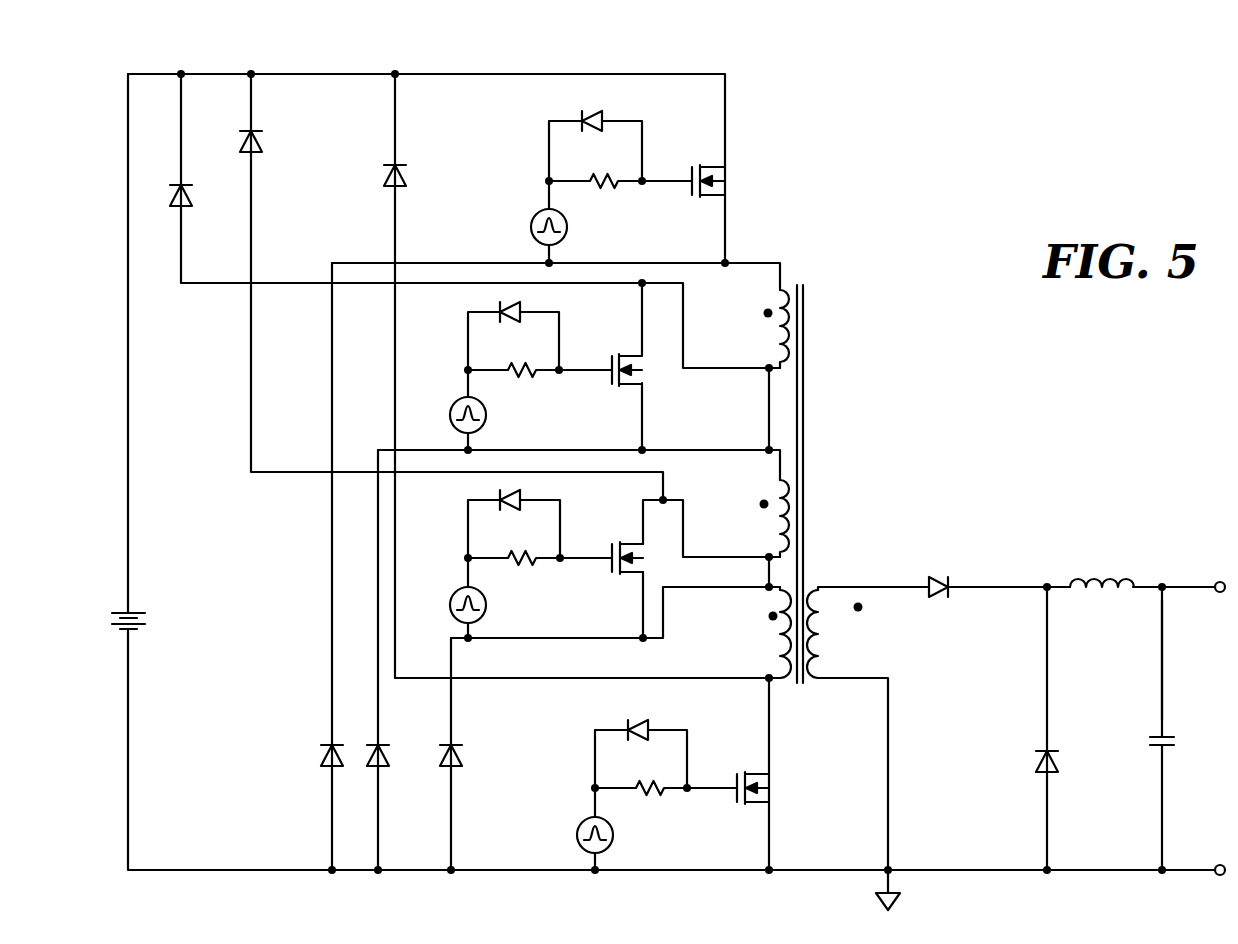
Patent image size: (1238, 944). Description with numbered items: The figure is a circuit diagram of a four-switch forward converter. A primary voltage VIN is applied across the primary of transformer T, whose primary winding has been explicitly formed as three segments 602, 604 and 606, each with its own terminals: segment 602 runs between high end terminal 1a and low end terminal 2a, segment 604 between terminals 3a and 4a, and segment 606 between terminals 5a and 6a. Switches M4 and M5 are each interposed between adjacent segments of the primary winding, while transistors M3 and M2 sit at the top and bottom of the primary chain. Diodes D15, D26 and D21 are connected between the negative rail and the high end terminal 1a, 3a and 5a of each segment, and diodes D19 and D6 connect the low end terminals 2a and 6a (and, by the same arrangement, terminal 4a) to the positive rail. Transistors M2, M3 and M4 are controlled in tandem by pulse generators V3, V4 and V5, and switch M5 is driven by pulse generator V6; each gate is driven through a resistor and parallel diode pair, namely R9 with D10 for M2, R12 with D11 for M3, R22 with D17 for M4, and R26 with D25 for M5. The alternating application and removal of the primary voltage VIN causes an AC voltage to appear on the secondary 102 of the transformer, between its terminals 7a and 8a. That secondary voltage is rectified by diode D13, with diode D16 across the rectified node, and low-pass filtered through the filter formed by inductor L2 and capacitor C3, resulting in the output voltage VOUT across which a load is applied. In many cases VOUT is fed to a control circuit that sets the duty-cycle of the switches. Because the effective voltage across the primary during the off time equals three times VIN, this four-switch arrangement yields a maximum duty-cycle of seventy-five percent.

The primary voltage VIN is at (140, 619).
The diode D19 is at (203, 215).
The diode D21 is at (378, 454).
The diode D6 is at (375, 177).
The diode D15 is at (310, 761).
The diode D26 is at (399, 777).
The diode D11 is at (595, 146).
The resistor R12 is at (595, 198).
The transistor M3 is at (683, 166).
The pulse generator V4 is at (532, 227).
The diode D17 is at (513, 336).
The resistor R22 is at (513, 385).
The switch M4 is at (600, 356).
The pulse generator V5 is at (449, 415).
The diode D25 is at (514, 524).
The resistor R26 is at (514, 573).
The switch M5 is at (601, 544).
The pulse generator V6 is at (449, 605).
The diode D10 is at (641, 741).
The resistor R9 is at (641, 774).
The transistor M2 is at (728, 775).
The pulse generator V3 is at (612, 839).
The transformer T is at (820, 484).
The primary winding segment 602 is at (766, 330).
The primary winding segment 604 is at (766, 517).
The primary winding segment 606 is at (763, 638).
The secondary 102 is at (822, 635).
The high end terminal 1a is at (767, 294).
The low end terminal 2a is at (767, 354).
The high end terminal 3a is at (764, 487).
The low end terminal 4a is at (764, 543).
The high end terminal 5a is at (754, 605).
The low end terminal 6a is at (754, 663).
The secondary terminal 7a is at (839, 605).
The secondary terminal 8a is at (839, 663).
The diode D13 is at (943, 575).
The filter inductor L2 is at (1102, 569).
The diode D16 is at (1024, 765).
The filter capacitor C3 is at (1148, 729).
The output voltage VOUT is at (1192, 660).